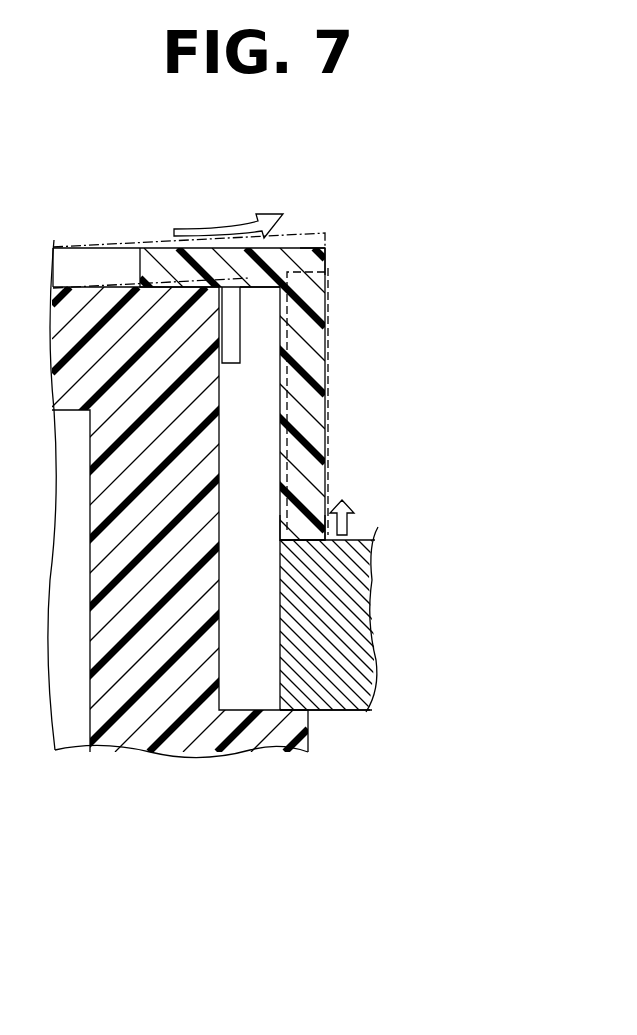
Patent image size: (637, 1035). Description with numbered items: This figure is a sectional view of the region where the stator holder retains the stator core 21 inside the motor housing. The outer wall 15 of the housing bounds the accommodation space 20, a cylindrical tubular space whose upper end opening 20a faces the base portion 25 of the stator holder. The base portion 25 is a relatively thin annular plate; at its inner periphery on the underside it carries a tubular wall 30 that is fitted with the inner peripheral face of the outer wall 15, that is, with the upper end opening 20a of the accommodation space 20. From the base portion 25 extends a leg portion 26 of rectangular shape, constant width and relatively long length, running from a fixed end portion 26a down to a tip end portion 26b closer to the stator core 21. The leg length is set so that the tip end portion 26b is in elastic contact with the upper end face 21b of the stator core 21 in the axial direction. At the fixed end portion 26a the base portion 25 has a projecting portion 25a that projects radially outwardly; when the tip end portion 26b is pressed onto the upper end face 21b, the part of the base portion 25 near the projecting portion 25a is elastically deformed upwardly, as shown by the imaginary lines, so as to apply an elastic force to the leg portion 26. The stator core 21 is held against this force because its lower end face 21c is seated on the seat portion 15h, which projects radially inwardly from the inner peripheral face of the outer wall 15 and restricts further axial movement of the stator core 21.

The outer wall 15 is at (210, 556).
The seat portion 15h is at (297, 722).
The accommodation space 20 is at (338, 401).
The upper end opening 20a is at (268, 298).
The stator core 21 is at (388, 643).
The upper end face 21b is at (357, 540).
The lower end face 21c is at (333, 718).
The base portion 25 is at (189, 339).
The projecting portion 25a is at (177, 262).
The leg portion 26 is at (363, 393).
The fixed end portion 26a is at (303, 263).
The tip end portion 26b is at (300, 498).
The tubular wall 30 is at (232, 328).